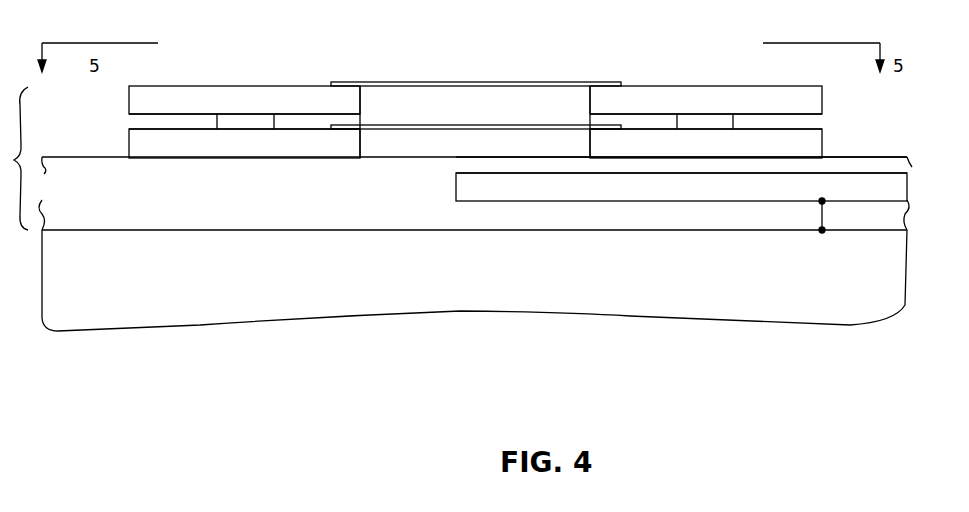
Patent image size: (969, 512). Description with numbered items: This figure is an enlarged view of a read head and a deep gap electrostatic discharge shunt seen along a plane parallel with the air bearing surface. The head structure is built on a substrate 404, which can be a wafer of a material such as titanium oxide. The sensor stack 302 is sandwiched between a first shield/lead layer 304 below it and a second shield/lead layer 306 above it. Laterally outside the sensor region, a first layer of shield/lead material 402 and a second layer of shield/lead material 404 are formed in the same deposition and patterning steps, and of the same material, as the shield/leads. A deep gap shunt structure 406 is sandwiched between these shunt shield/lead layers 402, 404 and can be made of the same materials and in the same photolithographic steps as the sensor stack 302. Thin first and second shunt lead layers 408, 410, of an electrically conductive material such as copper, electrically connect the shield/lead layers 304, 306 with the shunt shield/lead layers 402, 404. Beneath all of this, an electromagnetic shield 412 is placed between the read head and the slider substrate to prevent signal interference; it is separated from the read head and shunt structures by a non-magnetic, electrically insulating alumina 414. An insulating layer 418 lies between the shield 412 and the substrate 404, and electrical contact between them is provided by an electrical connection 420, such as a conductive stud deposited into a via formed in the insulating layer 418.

The sensor stack 302 is at (232, 121).
The first shield/lead layer 304 is at (280, 143).
The second shield/lead layer 306 is at (280, 99).
The first layer of shield/lead material 402 is at (741, 143).
The substrate 404 is at (741, 99).
The deep gap shunt structure 406 is at (727, 123).
The first shunt lead layer 408 is at (525, 127).
The second shunt lead layer 410 is at (530, 85).
The electromagnetic shield 412 is at (722, 187).
The alumina insulating material 414 is at (648, 164).
The insulating layer 418 is at (376, 202).
The electrical connection 420 is at (820, 215).